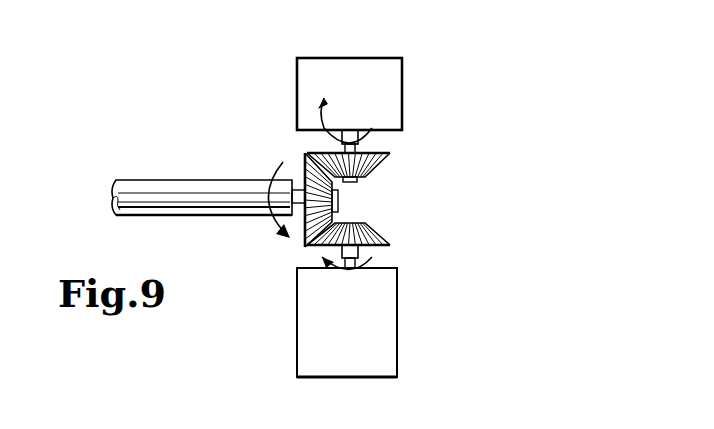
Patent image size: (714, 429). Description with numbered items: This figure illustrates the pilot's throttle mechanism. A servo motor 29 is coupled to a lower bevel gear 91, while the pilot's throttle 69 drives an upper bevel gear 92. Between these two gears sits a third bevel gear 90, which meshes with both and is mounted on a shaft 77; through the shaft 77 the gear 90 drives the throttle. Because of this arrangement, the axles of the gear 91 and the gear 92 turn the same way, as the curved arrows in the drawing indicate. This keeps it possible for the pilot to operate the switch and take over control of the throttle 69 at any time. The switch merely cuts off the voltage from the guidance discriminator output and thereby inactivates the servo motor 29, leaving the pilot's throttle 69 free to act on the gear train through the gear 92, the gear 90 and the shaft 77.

The pilot's throttle 69 is at (402, 97).
The bevel gear driven by pilot's throttle 92 is at (381, 163).
The bevel gear coupled to servo motor 91 is at (380, 240).
The bevel gear on shaft 90 is at (308, 242).
The shaft 77 is at (192, 185).
The servo motor 29 is at (388, 322).